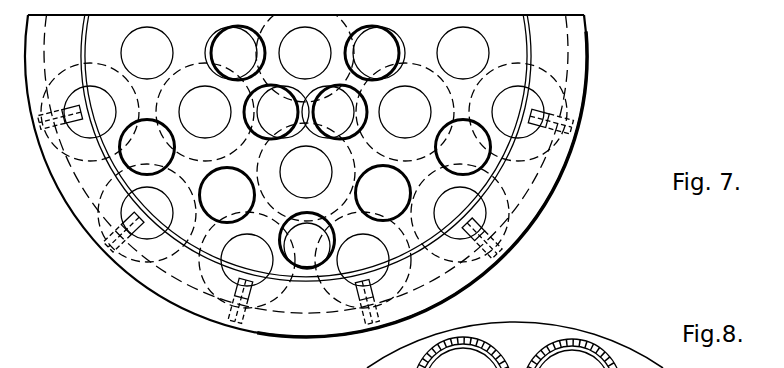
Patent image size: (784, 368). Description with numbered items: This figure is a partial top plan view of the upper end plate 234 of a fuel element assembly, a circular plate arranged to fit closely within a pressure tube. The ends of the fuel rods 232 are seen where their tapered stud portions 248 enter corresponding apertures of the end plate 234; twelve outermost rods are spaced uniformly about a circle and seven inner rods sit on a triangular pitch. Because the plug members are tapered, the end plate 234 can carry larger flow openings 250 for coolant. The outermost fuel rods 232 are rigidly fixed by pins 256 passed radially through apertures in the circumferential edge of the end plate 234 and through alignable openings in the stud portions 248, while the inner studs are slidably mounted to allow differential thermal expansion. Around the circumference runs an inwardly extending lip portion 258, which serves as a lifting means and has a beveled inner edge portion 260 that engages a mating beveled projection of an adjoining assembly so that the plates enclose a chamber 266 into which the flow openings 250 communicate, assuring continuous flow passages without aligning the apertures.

The fuel rods 232 is at (63, 182).
The upper end plate 234 is at (637, 75).
The stud portions 248 is at (293, 172).
The flow openings 250 is at (213, 176).
The pins 256 is at (580, 126).
The lip portion 258 is at (300, 306).
The beveled inner edge portion 260 is at (531, 37).
The chamber 266 is at (543, 208).